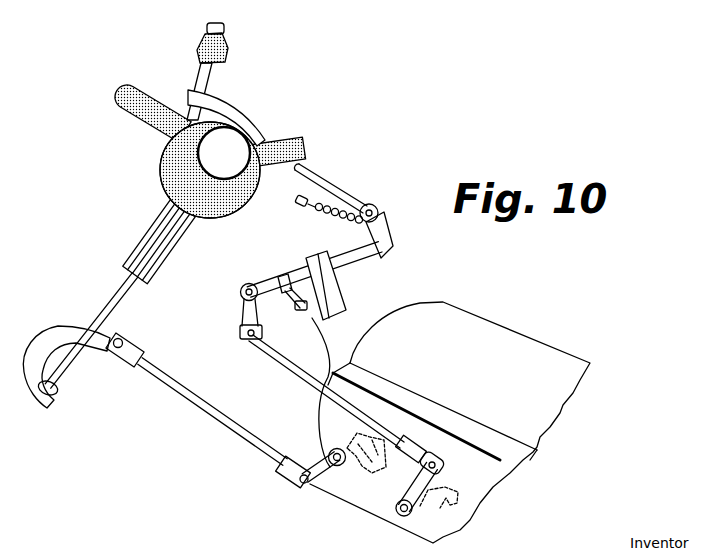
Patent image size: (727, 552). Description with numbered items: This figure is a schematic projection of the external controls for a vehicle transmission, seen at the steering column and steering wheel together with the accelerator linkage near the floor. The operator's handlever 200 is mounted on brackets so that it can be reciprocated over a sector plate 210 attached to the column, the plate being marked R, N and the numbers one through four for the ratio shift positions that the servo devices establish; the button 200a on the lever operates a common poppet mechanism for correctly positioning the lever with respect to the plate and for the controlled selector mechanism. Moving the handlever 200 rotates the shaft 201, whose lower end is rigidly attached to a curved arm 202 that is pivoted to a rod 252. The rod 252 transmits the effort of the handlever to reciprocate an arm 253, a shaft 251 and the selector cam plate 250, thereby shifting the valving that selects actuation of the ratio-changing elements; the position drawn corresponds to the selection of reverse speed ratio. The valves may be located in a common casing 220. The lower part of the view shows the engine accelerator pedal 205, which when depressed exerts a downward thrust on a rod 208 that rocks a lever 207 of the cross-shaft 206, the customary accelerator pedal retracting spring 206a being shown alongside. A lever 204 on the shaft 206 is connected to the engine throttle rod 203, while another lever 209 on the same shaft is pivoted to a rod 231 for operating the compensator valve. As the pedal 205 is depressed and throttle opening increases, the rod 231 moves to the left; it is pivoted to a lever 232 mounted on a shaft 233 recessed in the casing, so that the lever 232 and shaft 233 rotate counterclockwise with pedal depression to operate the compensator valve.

The operator's handlever 200 is at (215, 72).
The button 200a is at (222, 30).
The sector plate 210 is at (193, 93).
The rod (shaft) 201 is at (160, 224).
The curved arm 202 is at (63, 333).
The engine throttle rod 203 is at (330, 187).
The lever 204 is at (383, 223).
The engine accelerator pedal 205 is at (328, 284).
The cross-shaft 206 is at (360, 250).
The accelerator pedal retracting spring 206a is at (318, 217).
The rocking lever 207 is at (282, 303).
The rod 208 is at (313, 317).
The lever 209 is at (243, 318).
The rod 231 is at (300, 370).
The lever 232 is at (434, 481).
The shaft 233 is at (400, 514).
The common casing 220 is at (337, 482).
The selector cam plate 250 is at (380, 466).
The shaft 251 is at (320, 428).
The rod 252 is at (157, 370).
The arm 253 is at (320, 467).